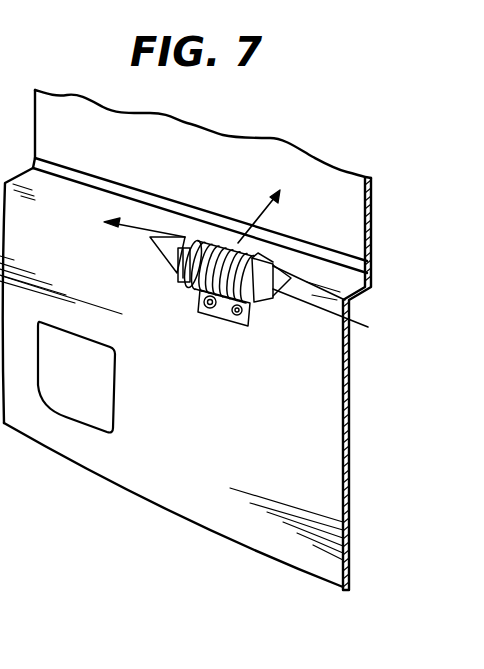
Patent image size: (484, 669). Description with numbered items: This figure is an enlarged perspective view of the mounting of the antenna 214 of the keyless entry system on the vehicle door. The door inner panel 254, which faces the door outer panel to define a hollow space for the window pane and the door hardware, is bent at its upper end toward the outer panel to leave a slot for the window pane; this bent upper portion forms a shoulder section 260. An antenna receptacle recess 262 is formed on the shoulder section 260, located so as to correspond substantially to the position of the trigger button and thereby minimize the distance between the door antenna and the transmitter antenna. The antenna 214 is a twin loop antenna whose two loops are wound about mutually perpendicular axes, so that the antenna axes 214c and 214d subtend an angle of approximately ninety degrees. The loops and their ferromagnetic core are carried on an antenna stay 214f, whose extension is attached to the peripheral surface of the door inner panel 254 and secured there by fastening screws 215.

The door inner panel 254 is at (158, 490).
The shoulder section 260 is at (133, 208).
The antenna 214 is at (221, 243).
The antenna axis 214c is at (272, 205).
The antenna axis 214d is at (115, 214).
The antenna receptacle recess 262 is at (180, 272).
The antenna stay 214f is at (201, 295).
The fastening screws 215 is at (236, 316).